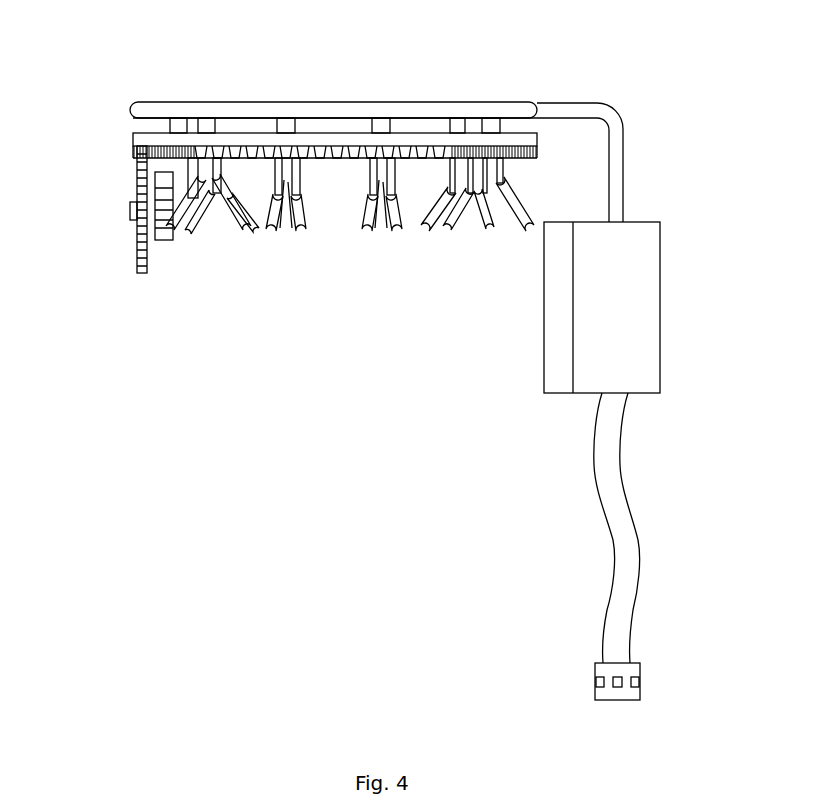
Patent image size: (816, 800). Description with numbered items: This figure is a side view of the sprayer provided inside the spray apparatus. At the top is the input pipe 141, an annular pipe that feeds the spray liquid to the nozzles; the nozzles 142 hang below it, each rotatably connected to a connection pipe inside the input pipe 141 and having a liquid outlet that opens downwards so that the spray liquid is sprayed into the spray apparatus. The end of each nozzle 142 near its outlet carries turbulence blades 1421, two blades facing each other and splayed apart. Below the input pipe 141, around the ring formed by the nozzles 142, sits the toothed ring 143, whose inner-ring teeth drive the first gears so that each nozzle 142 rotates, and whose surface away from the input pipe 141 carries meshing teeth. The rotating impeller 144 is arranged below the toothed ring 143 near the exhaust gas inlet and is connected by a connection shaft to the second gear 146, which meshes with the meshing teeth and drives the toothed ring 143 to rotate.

The input pipe 141 is at (312, 110).
The nozzle 142 is at (467, 127).
The toothed ring 143 is at (158, 137).
The rotating impeller 144 is at (150, 178).
The second gear 146 is at (140, 262).
The turbulence blade 1421 is at (520, 205).